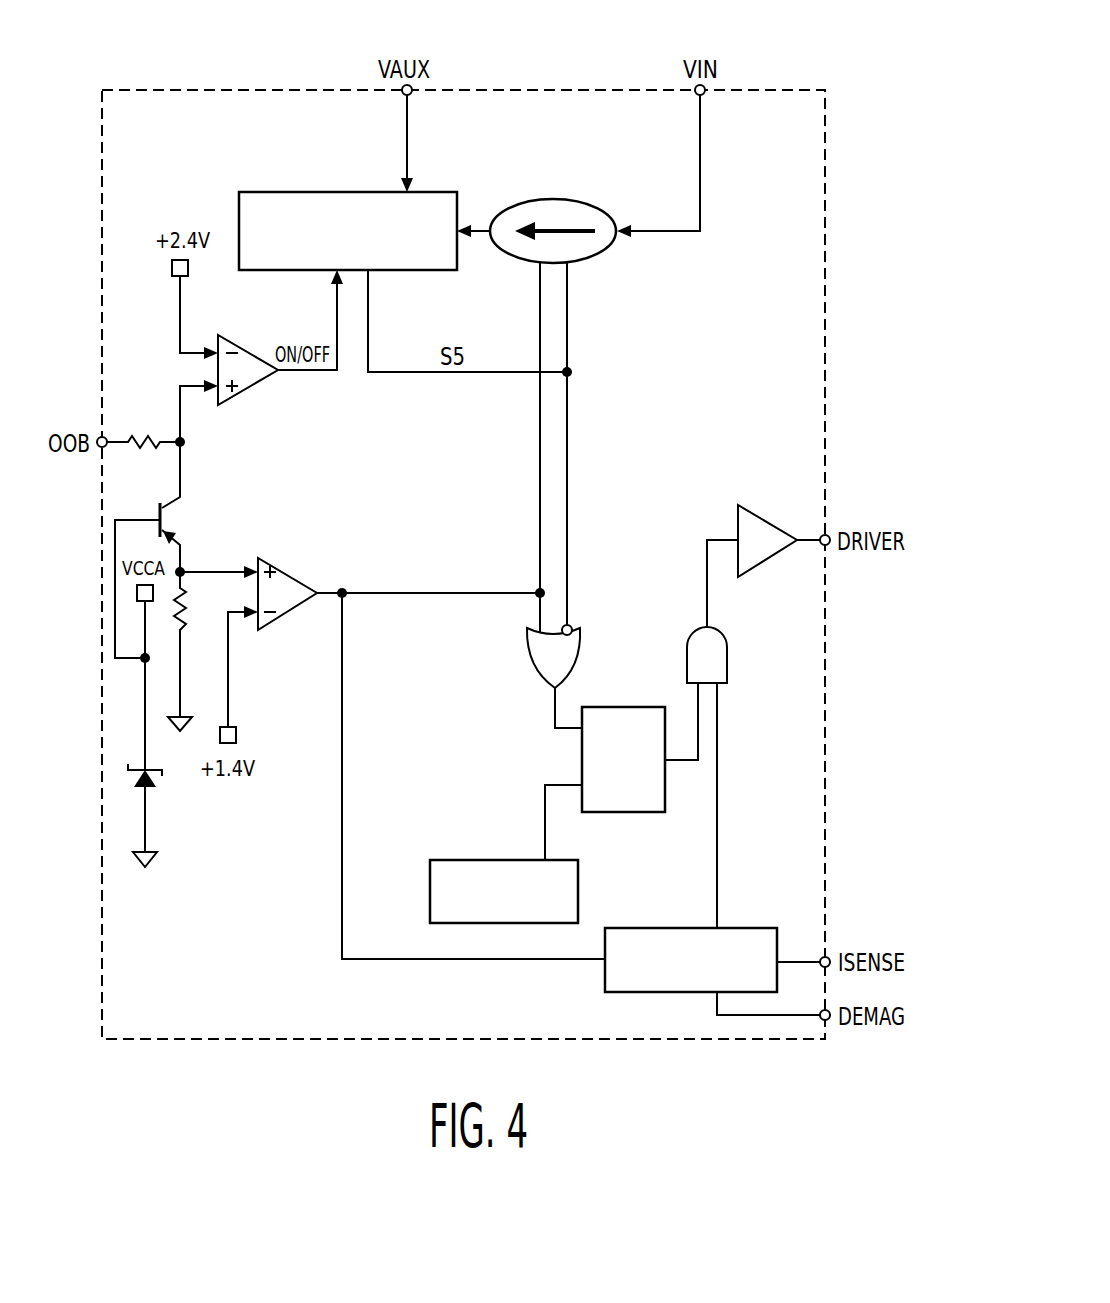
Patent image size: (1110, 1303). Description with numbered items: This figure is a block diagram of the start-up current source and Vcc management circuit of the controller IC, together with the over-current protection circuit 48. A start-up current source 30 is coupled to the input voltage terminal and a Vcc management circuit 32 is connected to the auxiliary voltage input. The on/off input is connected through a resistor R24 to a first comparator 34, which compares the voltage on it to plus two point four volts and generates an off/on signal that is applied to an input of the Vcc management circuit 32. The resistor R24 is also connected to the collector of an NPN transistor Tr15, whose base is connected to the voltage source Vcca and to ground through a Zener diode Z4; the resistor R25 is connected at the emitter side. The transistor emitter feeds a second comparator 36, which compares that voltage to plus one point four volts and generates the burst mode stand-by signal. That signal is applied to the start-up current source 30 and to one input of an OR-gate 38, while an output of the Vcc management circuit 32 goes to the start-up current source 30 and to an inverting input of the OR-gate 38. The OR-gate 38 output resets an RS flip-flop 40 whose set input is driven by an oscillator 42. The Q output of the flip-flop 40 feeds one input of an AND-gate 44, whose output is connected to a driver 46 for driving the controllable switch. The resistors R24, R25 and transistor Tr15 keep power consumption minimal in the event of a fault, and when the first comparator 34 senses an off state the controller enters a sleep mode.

The start-up current source 30 is at (588, 262).
The Vcc management circuit 32 is at (278, 190).
The first comparator 34 is at (240, 397).
The second comparator 36 is at (290, 617).
The OR-gate 38 is at (530, 668).
The RS flip-flop 40 is at (580, 762).
The oscillator 42 is at (460, 855).
The AND-gate 44 is at (730, 655).
The driver 46 is at (735, 520).
The overcurrent protect circuit 48 is at (640, 993).
The resistor R24 is at (143, 425).
The resistor R25 is at (202, 644).
The NPN transistor Tr15 is at (172, 550).
The Zener diode Z4 is at (133, 785).